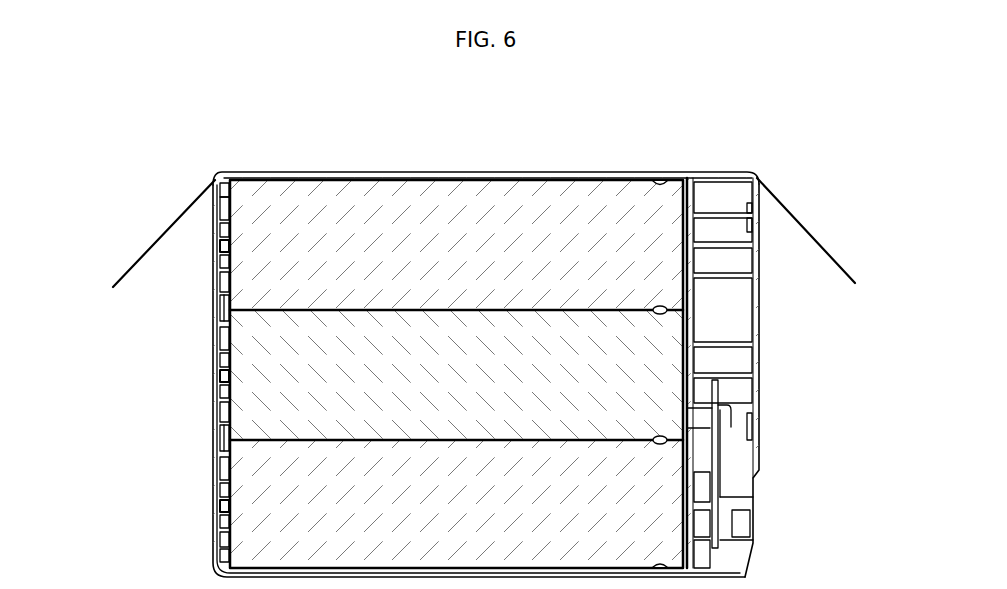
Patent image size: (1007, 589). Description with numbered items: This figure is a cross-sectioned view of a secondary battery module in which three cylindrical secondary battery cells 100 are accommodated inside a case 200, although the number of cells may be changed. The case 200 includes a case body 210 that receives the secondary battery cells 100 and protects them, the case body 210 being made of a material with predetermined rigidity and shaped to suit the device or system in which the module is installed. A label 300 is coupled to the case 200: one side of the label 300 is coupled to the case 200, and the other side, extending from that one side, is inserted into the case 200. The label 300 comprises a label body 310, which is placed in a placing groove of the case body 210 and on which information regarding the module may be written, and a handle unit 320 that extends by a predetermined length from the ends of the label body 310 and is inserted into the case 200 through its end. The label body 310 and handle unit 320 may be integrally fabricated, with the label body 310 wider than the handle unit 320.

The secondary battery cell 100 is at (380, 222).
The case 200 is at (174, 532).
The case body 210 is at (215, 473).
The label 300 is at (818, 110).
The label body 310 is at (622, 172).
The handle unit 320 is at (786, 208).